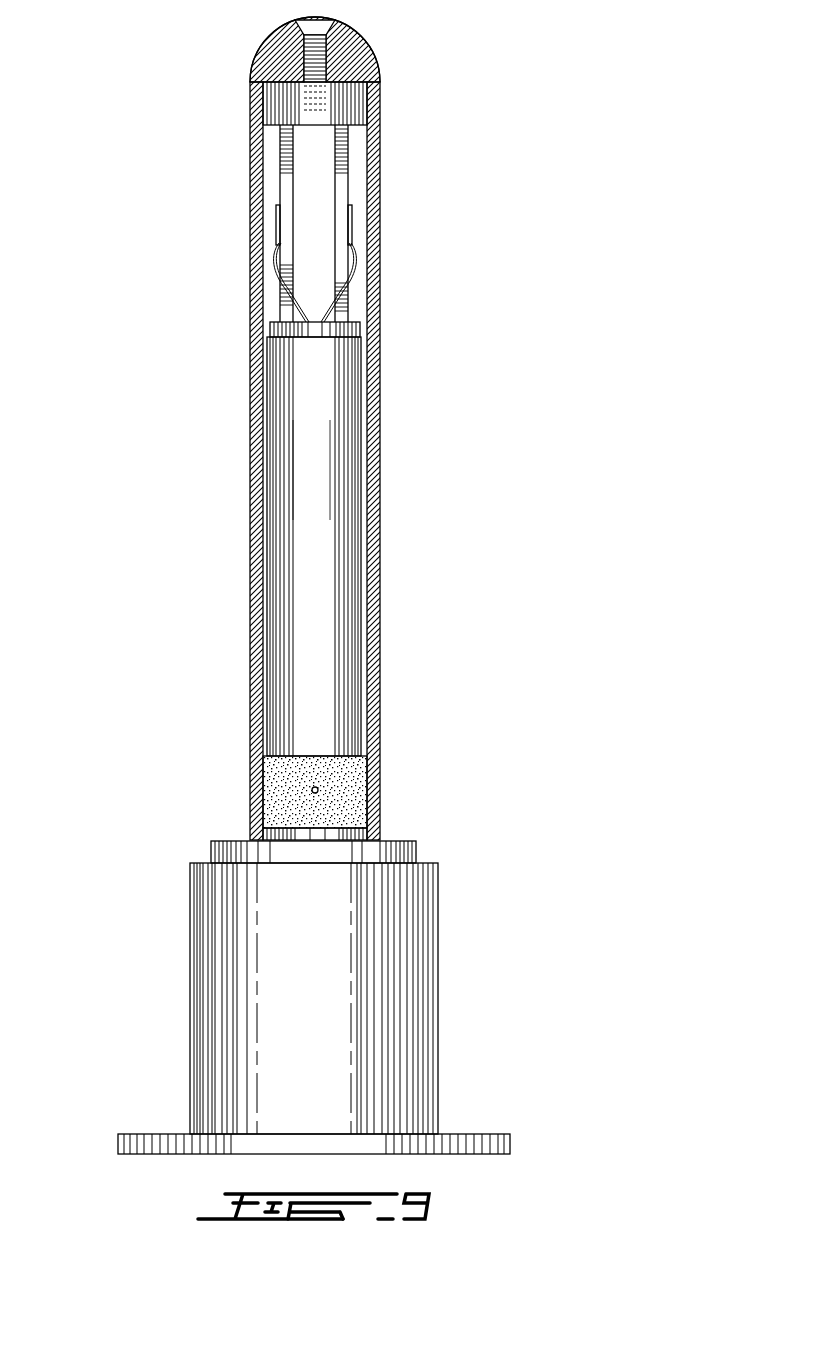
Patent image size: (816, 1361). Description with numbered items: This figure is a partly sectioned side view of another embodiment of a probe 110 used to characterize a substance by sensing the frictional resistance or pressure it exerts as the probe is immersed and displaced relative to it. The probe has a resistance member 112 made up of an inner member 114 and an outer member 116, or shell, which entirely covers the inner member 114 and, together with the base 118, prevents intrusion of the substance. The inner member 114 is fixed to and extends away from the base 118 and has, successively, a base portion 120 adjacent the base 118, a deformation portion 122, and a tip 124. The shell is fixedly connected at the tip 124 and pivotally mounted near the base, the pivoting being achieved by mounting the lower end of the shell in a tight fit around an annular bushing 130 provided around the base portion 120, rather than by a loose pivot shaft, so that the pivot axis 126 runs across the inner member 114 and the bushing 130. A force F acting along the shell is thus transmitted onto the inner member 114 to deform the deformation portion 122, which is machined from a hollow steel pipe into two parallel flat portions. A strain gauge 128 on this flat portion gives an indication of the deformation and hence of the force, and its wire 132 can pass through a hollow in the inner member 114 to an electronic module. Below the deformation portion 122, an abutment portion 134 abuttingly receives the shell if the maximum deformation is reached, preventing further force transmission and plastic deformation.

The probe 110 is at (550, 234).
The resistance member 112 is at (383, 137).
The inner member 114 is at (300, 545).
The outer member 116 is at (380, 635).
The base 118 is at (418, 853).
The base portion 120 is at (117, 338).
The deformation portion 122 is at (117, 100).
The tip 124 is at (314, 105).
The pivot axis 126 is at (318, 790).
The strain gauge 128 is at (353, 223).
The annular bushing 130 is at (312, 790).
The wire 132 is at (325, 307).
The abutment portion 134 is at (275, 345).